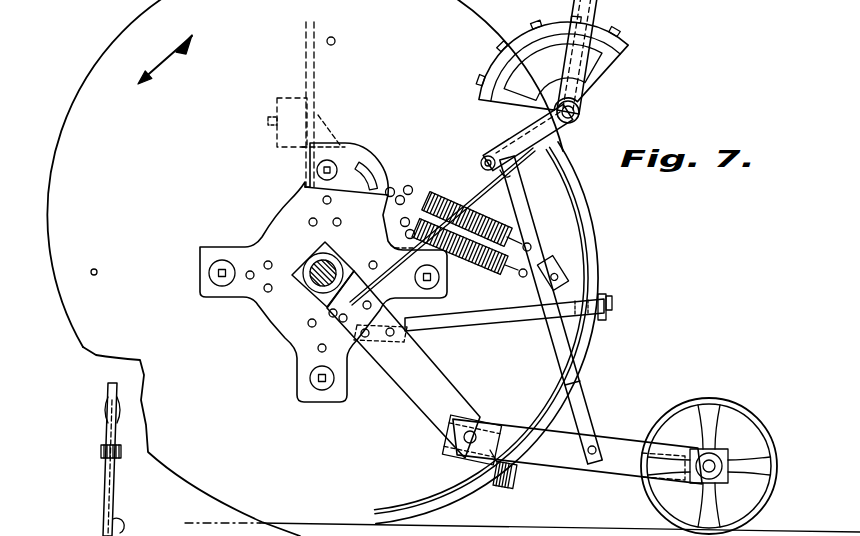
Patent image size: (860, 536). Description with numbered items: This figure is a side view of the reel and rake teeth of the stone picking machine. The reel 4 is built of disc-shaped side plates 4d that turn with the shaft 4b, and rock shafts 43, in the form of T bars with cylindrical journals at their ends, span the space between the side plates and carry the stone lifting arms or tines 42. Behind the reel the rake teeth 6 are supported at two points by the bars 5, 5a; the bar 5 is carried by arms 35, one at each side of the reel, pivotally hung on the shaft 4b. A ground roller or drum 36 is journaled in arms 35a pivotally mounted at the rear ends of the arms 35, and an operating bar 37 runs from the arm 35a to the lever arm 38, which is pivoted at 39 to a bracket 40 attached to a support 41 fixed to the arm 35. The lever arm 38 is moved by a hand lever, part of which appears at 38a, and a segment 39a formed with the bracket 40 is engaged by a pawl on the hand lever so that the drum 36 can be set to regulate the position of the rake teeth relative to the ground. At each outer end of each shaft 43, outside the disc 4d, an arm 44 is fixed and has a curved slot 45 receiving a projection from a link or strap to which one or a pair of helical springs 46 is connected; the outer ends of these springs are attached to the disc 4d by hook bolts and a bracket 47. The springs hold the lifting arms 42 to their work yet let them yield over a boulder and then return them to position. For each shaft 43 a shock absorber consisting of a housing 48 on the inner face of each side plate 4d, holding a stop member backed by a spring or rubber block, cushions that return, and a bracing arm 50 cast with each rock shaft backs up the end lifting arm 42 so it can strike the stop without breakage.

The reel 4 is at (96, 162).
The shaft 4b is at (265, 328).
The side plates 4d is at (241, 109).
The bar 5 is at (516, 476).
The bar 5a is at (602, 297).
The rake teeth 6 is at (467, 497).
The arms 35 is at (425, 400).
The arms 35a is at (622, 458).
The ground roller or drum 36 is at (762, 400).
The operating bar 37 is at (553, 350).
The lever arm 38 is at (512, 140).
The hand lever 38a is at (582, 66).
The pivot 39 is at (576, 121).
The segment 39a is at (522, 36).
The bracket 40 is at (536, 165).
The support 41 is at (477, 193).
The lifting arms or tines 42 is at (308, 62).
The rock shafts 43 is at (320, 170).
The arm 44 is at (352, 158).
The curved slot 45 is at (372, 176).
The helical springs 46 is at (492, 228).
The bracket 47 is at (556, 270).
The housing 48 is at (277, 138).
The bracing arm 50 is at (330, 130).